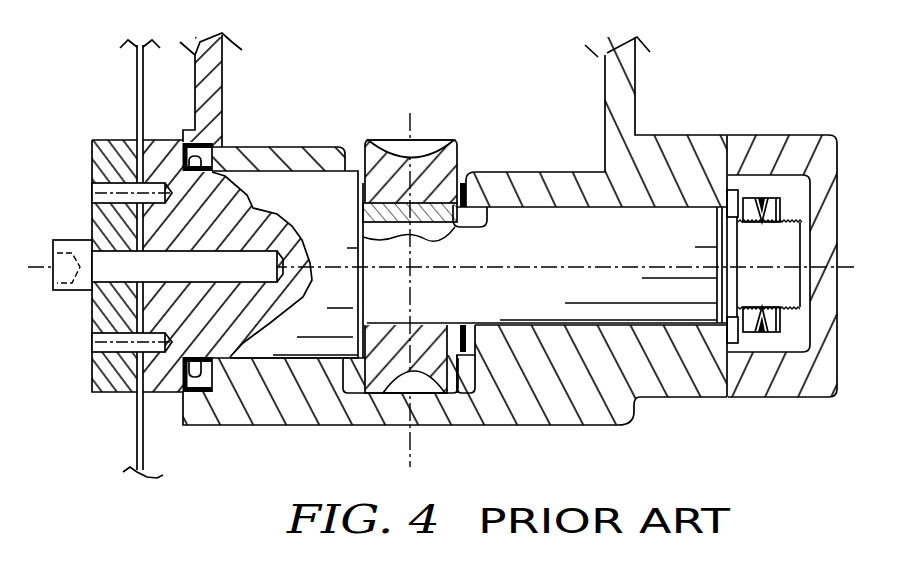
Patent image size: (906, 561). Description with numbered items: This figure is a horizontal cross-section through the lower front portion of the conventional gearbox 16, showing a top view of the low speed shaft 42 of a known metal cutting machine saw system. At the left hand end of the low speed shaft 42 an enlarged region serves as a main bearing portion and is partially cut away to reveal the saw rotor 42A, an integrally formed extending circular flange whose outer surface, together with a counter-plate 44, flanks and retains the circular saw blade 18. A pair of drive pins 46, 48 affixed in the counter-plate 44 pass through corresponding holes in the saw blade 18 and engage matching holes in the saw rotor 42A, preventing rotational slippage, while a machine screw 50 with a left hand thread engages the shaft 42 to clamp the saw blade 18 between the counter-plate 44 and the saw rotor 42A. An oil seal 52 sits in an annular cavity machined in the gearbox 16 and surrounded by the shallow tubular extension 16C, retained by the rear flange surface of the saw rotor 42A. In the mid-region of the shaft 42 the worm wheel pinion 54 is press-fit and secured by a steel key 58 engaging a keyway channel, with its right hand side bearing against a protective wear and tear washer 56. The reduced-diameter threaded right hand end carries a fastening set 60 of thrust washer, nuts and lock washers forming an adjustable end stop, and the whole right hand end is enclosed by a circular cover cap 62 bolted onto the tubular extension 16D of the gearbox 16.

The gearbox 16 is at (191, 511).
The shallow tubular extension 16C is at (180, 397).
The tubular extension 16D is at (683, 387).
The circular saw blade 18 is at (137, 80).
The low speed shaft 42 is at (330, 213).
The saw rotor 42A is at (163, 383).
The counter-plate 44 is at (128, 162).
The drive pin 46 is at (92, 193).
The drive pin 48 is at (110, 340).
The machine screw 50 is at (82, 288).
The oil seal 52 is at (200, 162).
The worm wheel pinion 54 is at (390, 147).
The wear and tear washer 56 is at (463, 183).
The steel key 58 is at (490, 207).
The fastening set 60 is at (762, 183).
The circular cover cap 62 is at (765, 377).